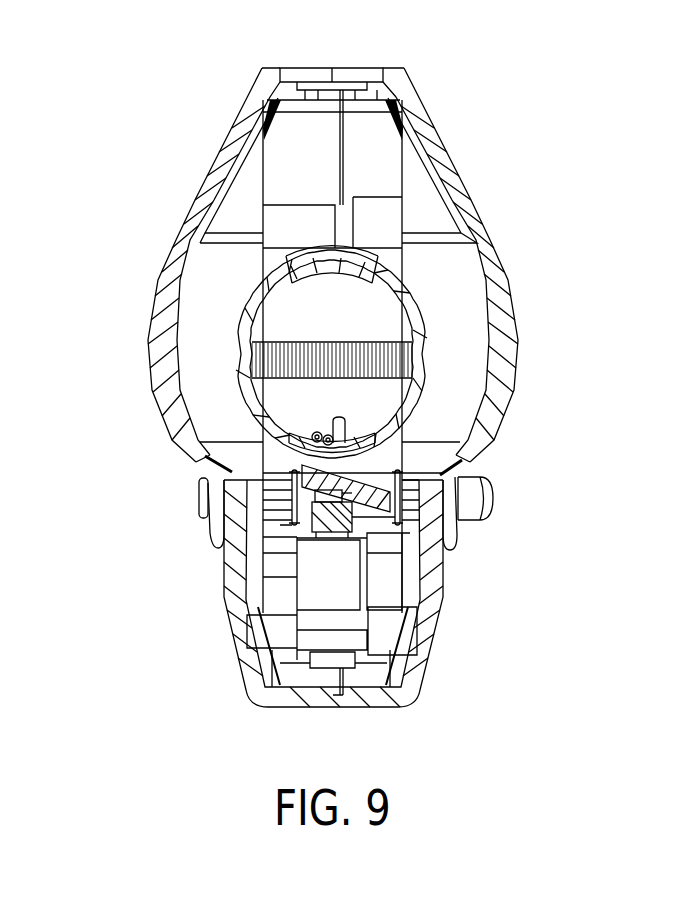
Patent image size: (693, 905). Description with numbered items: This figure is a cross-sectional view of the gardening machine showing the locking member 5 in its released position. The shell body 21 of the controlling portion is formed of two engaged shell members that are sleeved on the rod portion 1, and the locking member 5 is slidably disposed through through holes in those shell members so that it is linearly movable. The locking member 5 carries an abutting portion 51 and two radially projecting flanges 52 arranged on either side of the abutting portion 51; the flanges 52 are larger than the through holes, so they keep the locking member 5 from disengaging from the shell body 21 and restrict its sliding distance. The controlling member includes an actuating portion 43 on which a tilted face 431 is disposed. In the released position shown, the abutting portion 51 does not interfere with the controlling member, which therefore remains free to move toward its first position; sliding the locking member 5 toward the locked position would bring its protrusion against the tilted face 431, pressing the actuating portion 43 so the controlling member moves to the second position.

The rod portion 1 is at (407, 287).
The shell body 21 is at (503, 310).
The locking member 5 is at (300, 466).
The abutting portion 51 is at (338, 495).
The flange 52 is at (292, 493).
The actuating portion 43 is at (343, 533).
The tilted face 431 is at (345, 503).